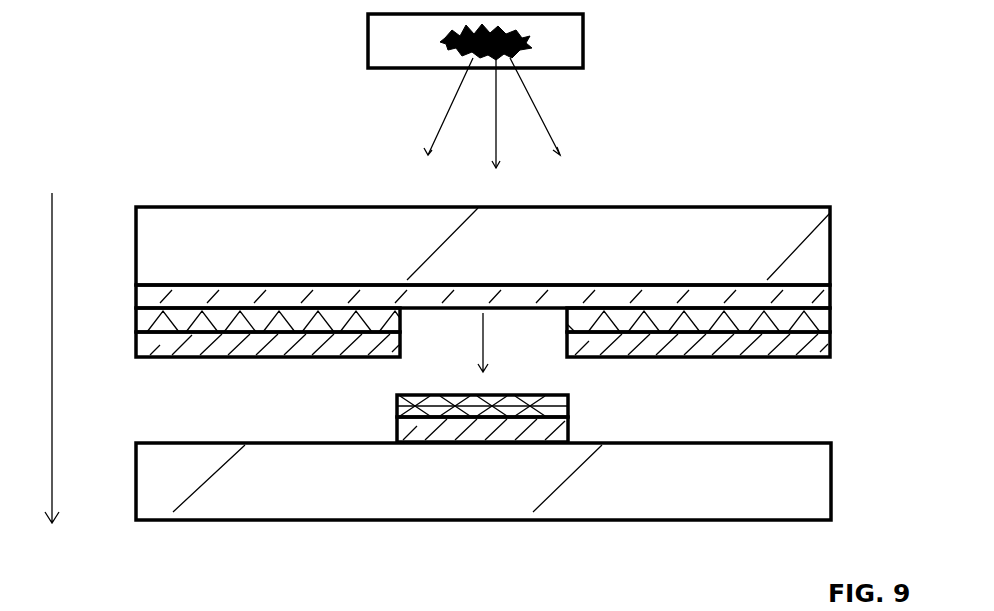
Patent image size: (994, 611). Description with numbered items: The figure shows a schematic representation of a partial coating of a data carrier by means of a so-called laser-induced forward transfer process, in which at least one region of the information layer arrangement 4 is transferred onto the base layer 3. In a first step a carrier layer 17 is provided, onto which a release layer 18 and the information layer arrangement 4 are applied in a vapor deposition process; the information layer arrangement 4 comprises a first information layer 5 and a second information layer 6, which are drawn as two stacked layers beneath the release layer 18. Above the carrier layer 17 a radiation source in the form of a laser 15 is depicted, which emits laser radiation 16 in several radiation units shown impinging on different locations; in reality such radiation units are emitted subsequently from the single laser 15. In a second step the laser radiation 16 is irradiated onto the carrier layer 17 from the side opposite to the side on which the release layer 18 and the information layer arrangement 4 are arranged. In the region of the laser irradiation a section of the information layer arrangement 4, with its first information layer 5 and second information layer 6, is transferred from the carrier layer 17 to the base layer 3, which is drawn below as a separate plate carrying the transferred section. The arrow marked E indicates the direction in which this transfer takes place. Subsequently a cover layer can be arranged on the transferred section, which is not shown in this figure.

The base layer 3 is at (150, 512).
The information layer arrangement 4 is at (489, 375).
The first information layer 5 is at (818, 324).
The second information layer 6 is at (818, 353).
The laser 15 is at (573, 42).
The laser radiation 16 is at (547, 115).
The carrier layer 17 is at (147, 218).
The release layer 18 is at (137, 295).
The direction of stacking E is at (52, 252).